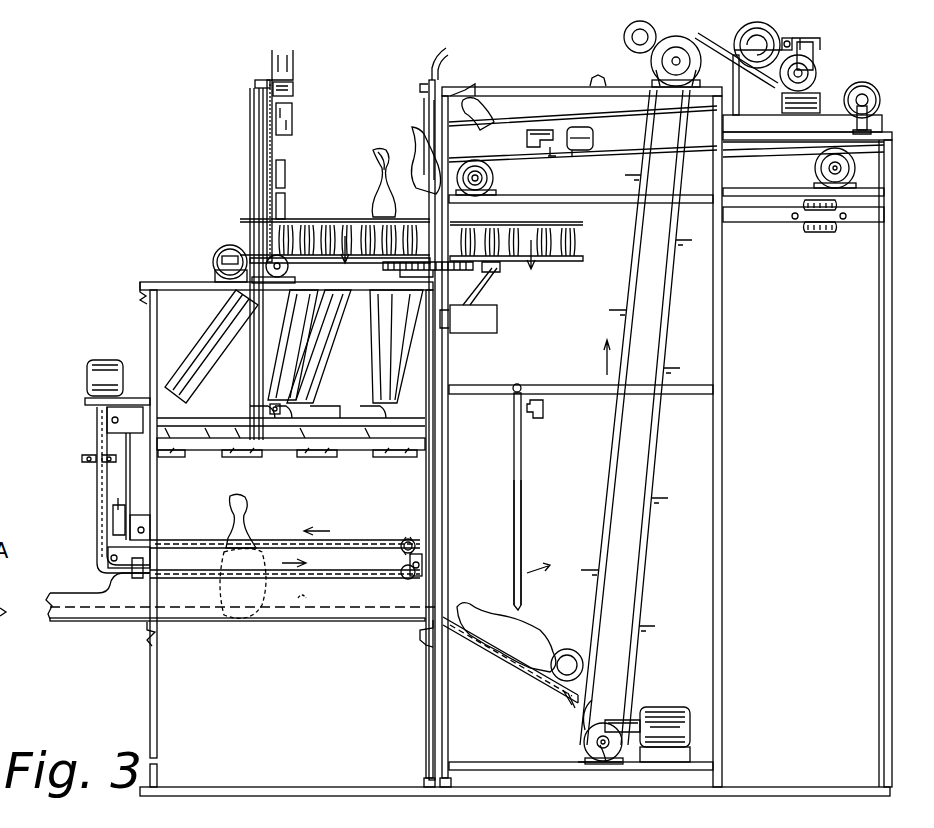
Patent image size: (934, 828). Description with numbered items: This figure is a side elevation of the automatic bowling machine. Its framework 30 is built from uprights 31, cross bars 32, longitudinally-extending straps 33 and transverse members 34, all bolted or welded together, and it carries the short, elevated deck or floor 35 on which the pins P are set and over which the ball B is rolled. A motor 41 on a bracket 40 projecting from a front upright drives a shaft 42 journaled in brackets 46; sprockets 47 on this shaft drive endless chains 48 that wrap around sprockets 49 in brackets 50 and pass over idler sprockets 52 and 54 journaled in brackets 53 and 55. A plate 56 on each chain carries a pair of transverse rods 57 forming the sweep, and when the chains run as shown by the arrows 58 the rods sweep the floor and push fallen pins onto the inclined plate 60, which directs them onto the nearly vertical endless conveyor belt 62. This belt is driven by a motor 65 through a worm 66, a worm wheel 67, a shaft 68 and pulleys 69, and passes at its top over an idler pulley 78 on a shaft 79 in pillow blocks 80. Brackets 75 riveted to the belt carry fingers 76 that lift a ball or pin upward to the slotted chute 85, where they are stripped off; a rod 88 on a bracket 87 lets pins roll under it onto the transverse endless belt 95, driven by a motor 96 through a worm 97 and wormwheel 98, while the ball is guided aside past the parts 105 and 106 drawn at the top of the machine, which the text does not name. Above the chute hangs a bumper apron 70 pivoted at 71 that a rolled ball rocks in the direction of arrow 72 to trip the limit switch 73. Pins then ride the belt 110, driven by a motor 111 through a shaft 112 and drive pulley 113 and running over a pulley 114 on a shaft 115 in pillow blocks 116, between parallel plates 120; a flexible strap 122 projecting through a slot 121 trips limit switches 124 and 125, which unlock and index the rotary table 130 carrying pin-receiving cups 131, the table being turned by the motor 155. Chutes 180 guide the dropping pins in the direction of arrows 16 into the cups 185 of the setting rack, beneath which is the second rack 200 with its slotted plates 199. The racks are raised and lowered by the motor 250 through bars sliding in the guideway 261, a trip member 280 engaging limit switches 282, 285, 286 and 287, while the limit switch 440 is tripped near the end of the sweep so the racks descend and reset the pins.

The direction of pin travel 16 is at (444, 265).
The framework 30 is at (133, 665).
The uprights 31 is at (157, 716).
The cross bars 32 is at (140, 283).
The longitudinally-extending straps 33 is at (194, 282).
The transverse members 34 is at (456, 87).
The deck or floor 35 is at (303, 604).
The bracket 40 is at (128, 398).
The motor 41 is at (86, 377).
The shaft 42 is at (105, 421).
The brackets 46 is at (128, 425).
The sprockets 47 is at (124, 430).
The endless chains 48 is at (215, 532).
The sprockets 49 is at (410, 540).
The brackets 50 is at (400, 556).
The idler sprockets 52 is at (107, 553).
The brackets 53 is at (138, 578).
The idler sprockets 54 is at (148, 516).
The brackets 55 is at (146, 528).
The plate 56 is at (88, 463).
The rods 57 is at (108, 464).
The arrows 58 is at (322, 531).
The inclined plate 60 is at (492, 642).
The endless conveyor belt 62 is at (650, 584).
The motor 65 is at (662, 708).
The worm 66 is at (610, 722).
The worm wheel 67 is at (588, 737).
The shaft 68 is at (606, 762).
The pulleys 69 is at (591, 712).
The bumper apron 70 is at (522, 487).
The pivot 71 is at (520, 384).
The arrow 72 is at (547, 585).
The limit switch 73 is at (538, 418).
The brackets 75 is at (610, 445).
The fingers 76 is at (612, 306).
The idler pulley 78 is at (676, 42).
The shaft 79 is at (667, 63).
The pillow blocks 80 is at (675, 90).
The inclined plate or chute 85 is at (722, 52).
The bracket 87 is at (740, 93).
The rod 88 is at (790, 42).
The endless belt 95 is at (822, 95).
The motor 96 is at (878, 92).
The worm 97 is at (870, 101).
The wormwheel 98 is at (870, 117).
The housing 105 is at (815, 47).
The bracket 106 is at (821, 40).
The belt 110 is at (738, 154).
The motor 111 is at (823, 233).
The shaft 112 is at (827, 170).
The drive pulley 113 is at (846, 163).
The pulley 114 is at (493, 174).
The shaft 115 is at (478, 176).
The pillow blocks 116 is at (497, 194).
The parallel plates 120 is at (486, 128).
The slot 121 is at (551, 158).
The flexible strap 122 is at (544, 130).
The limit switch 124 is at (580, 128).
The limit switch 125 is at (573, 158).
The rotary pin-receiving table 130 is at (553, 262).
The pin-receiving cups 131 is at (338, 228).
The motor 155 is at (468, 336).
The chutes 180 is at (226, 326).
The cups 185 is at (415, 411).
The plates 199 is at (318, 456).
The second rack 200 is at (350, 450).
The motor 250 is at (224, 247).
The guideway 261 is at (252, 117).
The trip member 280 is at (293, 89).
The limit switch 282 is at (289, 50).
The limit switch 285 is at (293, 116).
The limit switch 286 is at (286, 176).
The limit switch 287 is at (286, 210).
The limit switch 440 is at (113, 520).
The position B is at (745, 40).
The pins P is at (377, 173).